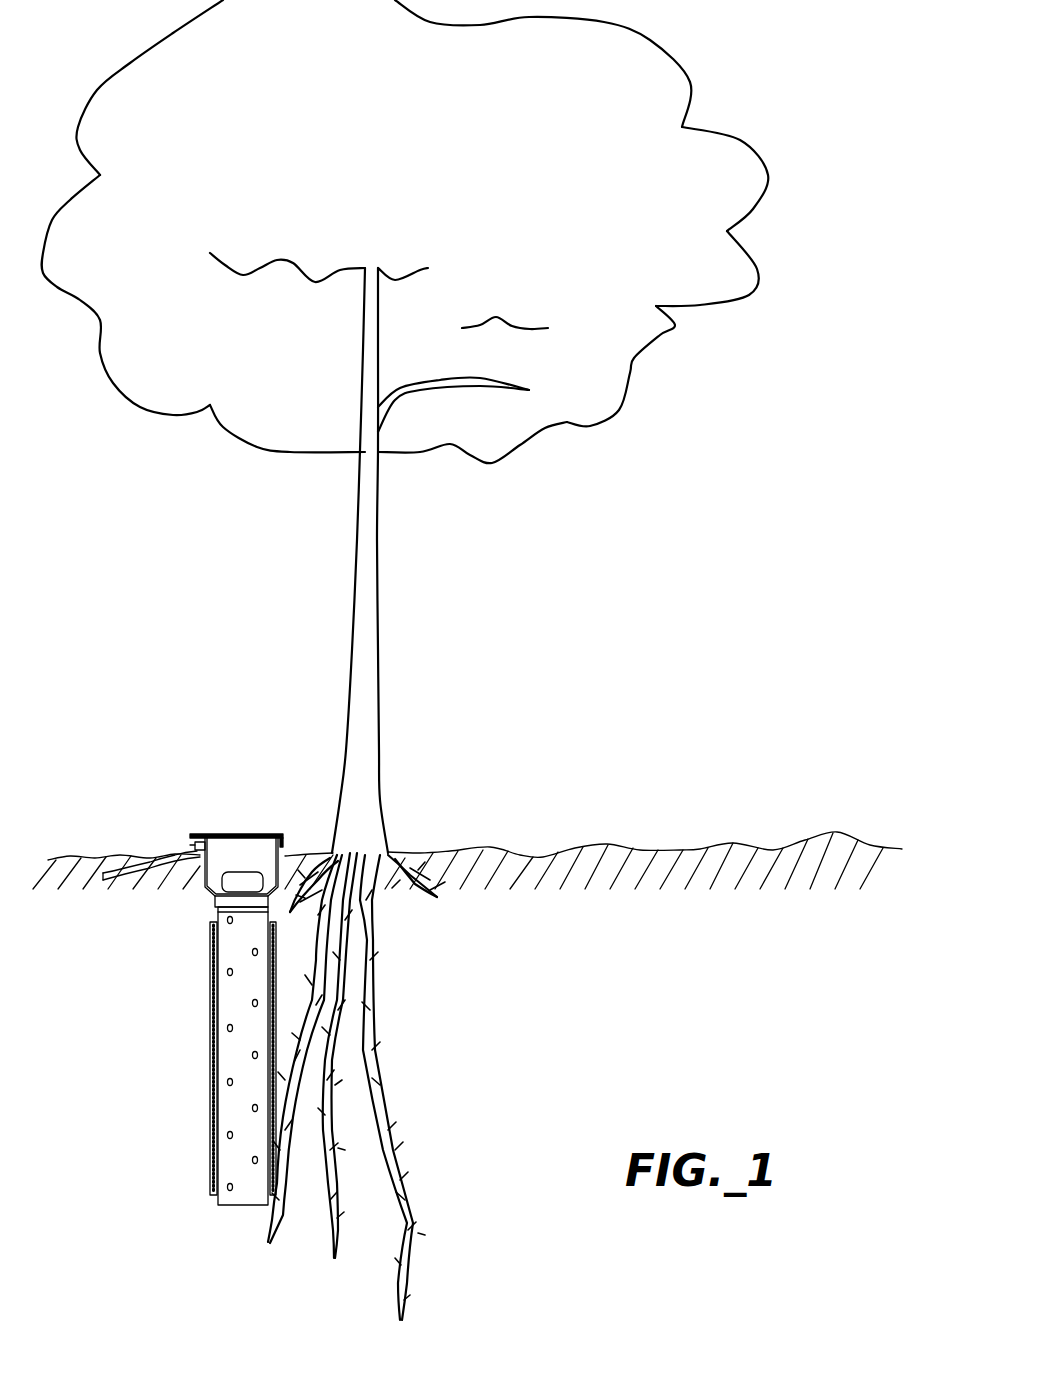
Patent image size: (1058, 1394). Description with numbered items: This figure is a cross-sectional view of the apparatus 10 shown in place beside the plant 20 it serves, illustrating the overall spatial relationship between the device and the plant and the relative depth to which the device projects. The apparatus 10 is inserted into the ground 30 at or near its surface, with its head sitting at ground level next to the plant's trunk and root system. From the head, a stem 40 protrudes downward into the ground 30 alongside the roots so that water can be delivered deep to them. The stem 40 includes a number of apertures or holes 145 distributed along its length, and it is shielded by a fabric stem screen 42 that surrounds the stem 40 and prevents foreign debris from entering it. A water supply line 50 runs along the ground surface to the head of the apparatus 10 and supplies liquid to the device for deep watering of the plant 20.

The apparatus 10 is at (243, 818).
The plant 20 is at (377, 530).
The ground 30 is at (517, 852).
The stem 40 is at (218, 1043).
The fabric stem screen 42 is at (210, 1090).
The water supply line 50 is at (137, 865).
The apertures or holes 145 is at (228, 972).